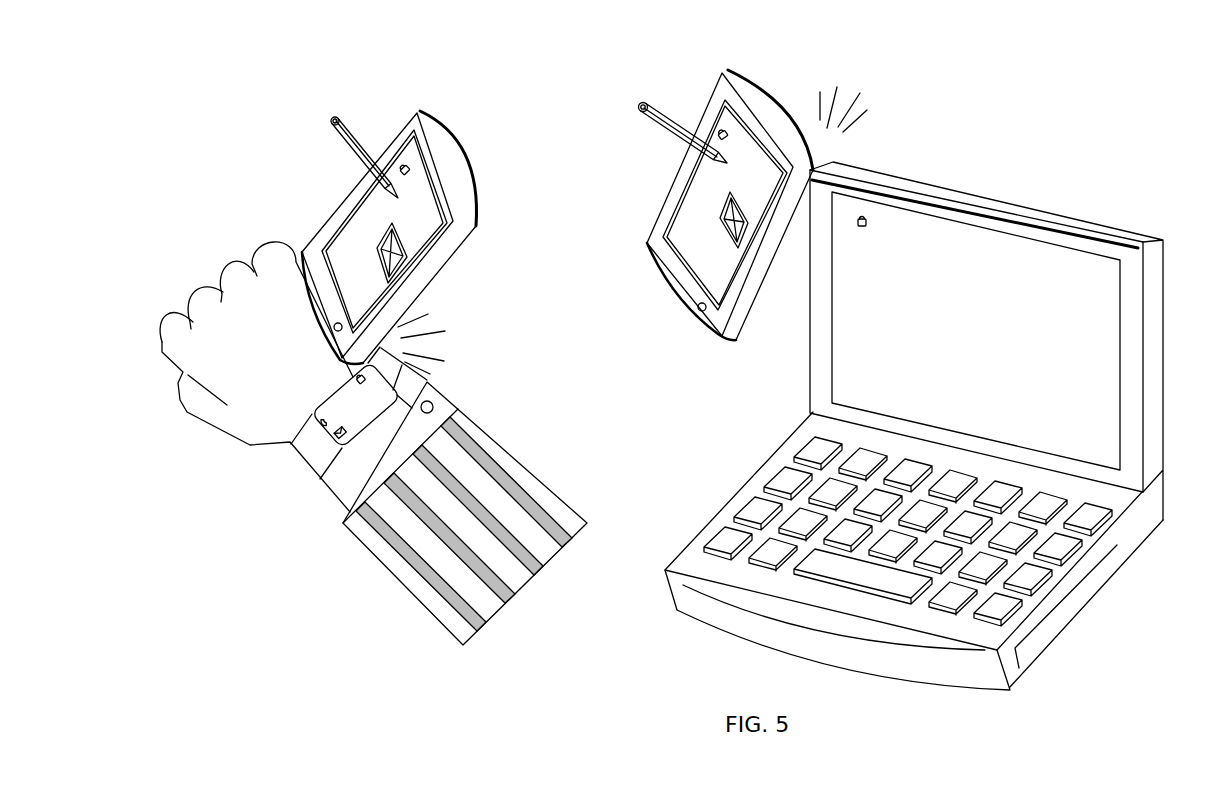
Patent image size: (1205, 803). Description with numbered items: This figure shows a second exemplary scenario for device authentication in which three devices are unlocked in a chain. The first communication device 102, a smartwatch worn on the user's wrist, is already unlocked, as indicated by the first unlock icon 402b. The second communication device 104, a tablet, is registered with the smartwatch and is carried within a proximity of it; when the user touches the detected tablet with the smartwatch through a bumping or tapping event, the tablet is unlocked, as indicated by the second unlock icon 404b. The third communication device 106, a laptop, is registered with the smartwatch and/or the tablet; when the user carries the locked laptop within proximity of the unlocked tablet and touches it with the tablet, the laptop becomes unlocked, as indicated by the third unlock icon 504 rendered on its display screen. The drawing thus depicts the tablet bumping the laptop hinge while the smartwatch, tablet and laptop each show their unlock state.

The first communication device 102 is at (300, 455).
The second communication device 104 is at (472, 208).
The third communication device 106 is at (1082, 213).
The first unlock icon 402b is at (254, 262).
The second unlock icon 404b is at (397, 160).
The third unlock icon 504 is at (866, 214).